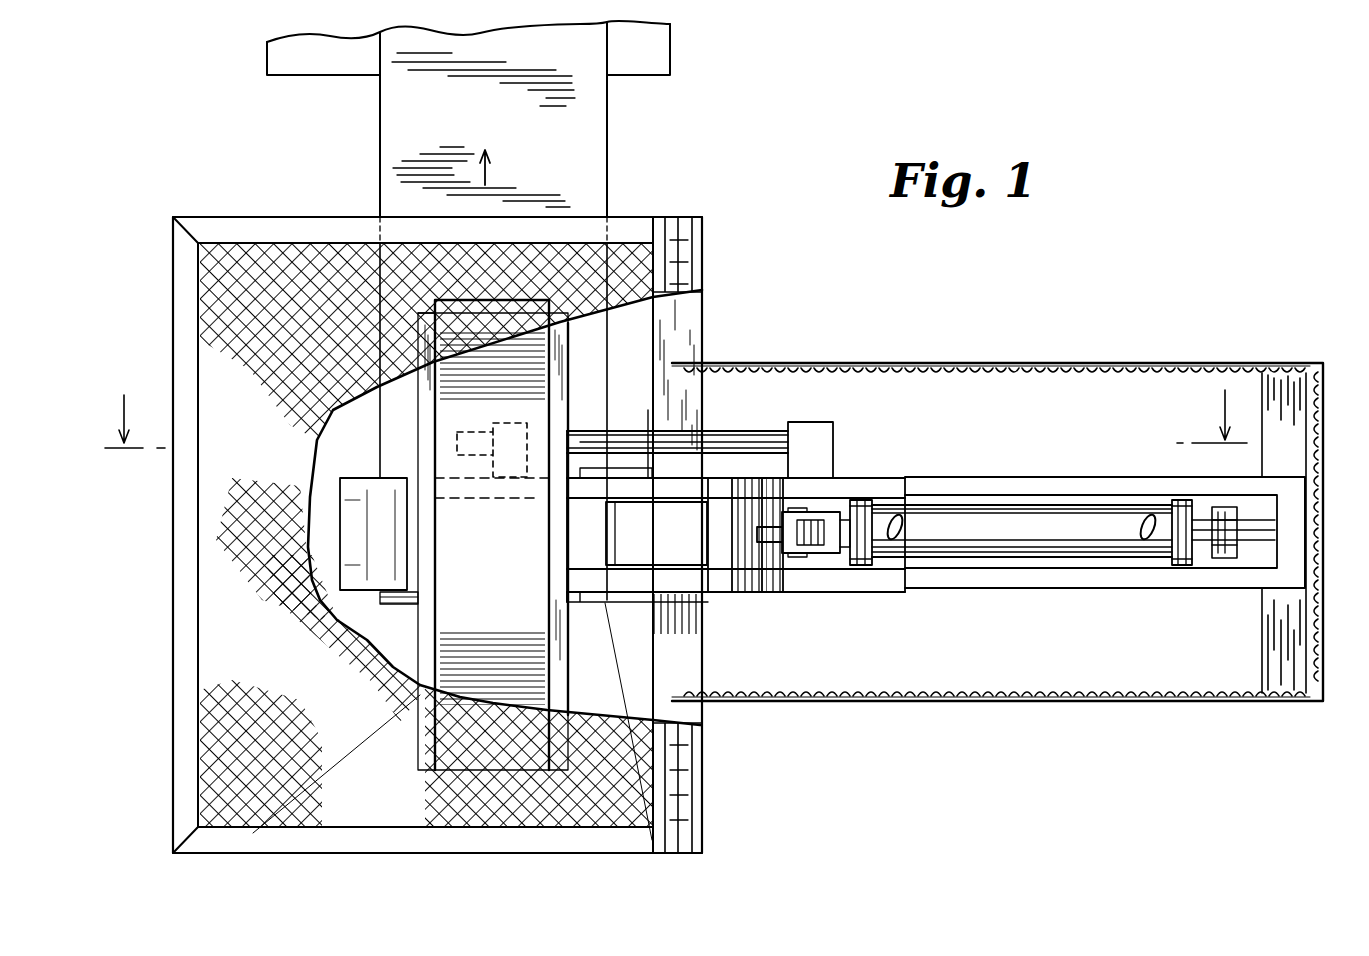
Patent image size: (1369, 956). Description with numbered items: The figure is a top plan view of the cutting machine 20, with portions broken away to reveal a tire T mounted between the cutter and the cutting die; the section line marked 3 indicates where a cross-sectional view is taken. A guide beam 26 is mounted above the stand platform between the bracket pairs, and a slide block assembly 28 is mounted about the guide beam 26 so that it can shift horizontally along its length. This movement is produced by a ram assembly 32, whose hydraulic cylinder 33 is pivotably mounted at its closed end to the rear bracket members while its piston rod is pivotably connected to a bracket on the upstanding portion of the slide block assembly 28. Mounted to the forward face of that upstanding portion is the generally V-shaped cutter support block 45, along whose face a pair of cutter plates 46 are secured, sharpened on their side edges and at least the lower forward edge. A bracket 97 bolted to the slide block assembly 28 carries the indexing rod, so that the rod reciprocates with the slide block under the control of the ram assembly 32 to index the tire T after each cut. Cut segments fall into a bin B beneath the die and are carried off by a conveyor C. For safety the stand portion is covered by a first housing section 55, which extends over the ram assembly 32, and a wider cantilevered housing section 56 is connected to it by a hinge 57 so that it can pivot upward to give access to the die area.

The conveyor C is at (596, 162).
The cantilevered housing section 56 is at (278, 243).
The hinge 57 is at (680, 256).
The tire T is at (490, 526).
The bin B is at (401, 646).
The cutting machine 20 is at (748, 345).
The cutter support block 45 is at (668, 553).
The cutter plates 46 is at (590, 541).
The bracket 97 is at (831, 428).
The slide block assembly 28 is at (846, 492).
The ram assembly 32 is at (1046, 458).
The guide beam 26 is at (988, 585).
The hydraulic cylinder 33 is at (1107, 548).
The first housing section 55 is at (986, 362).
The section line 3- 3 is at (666, 419).